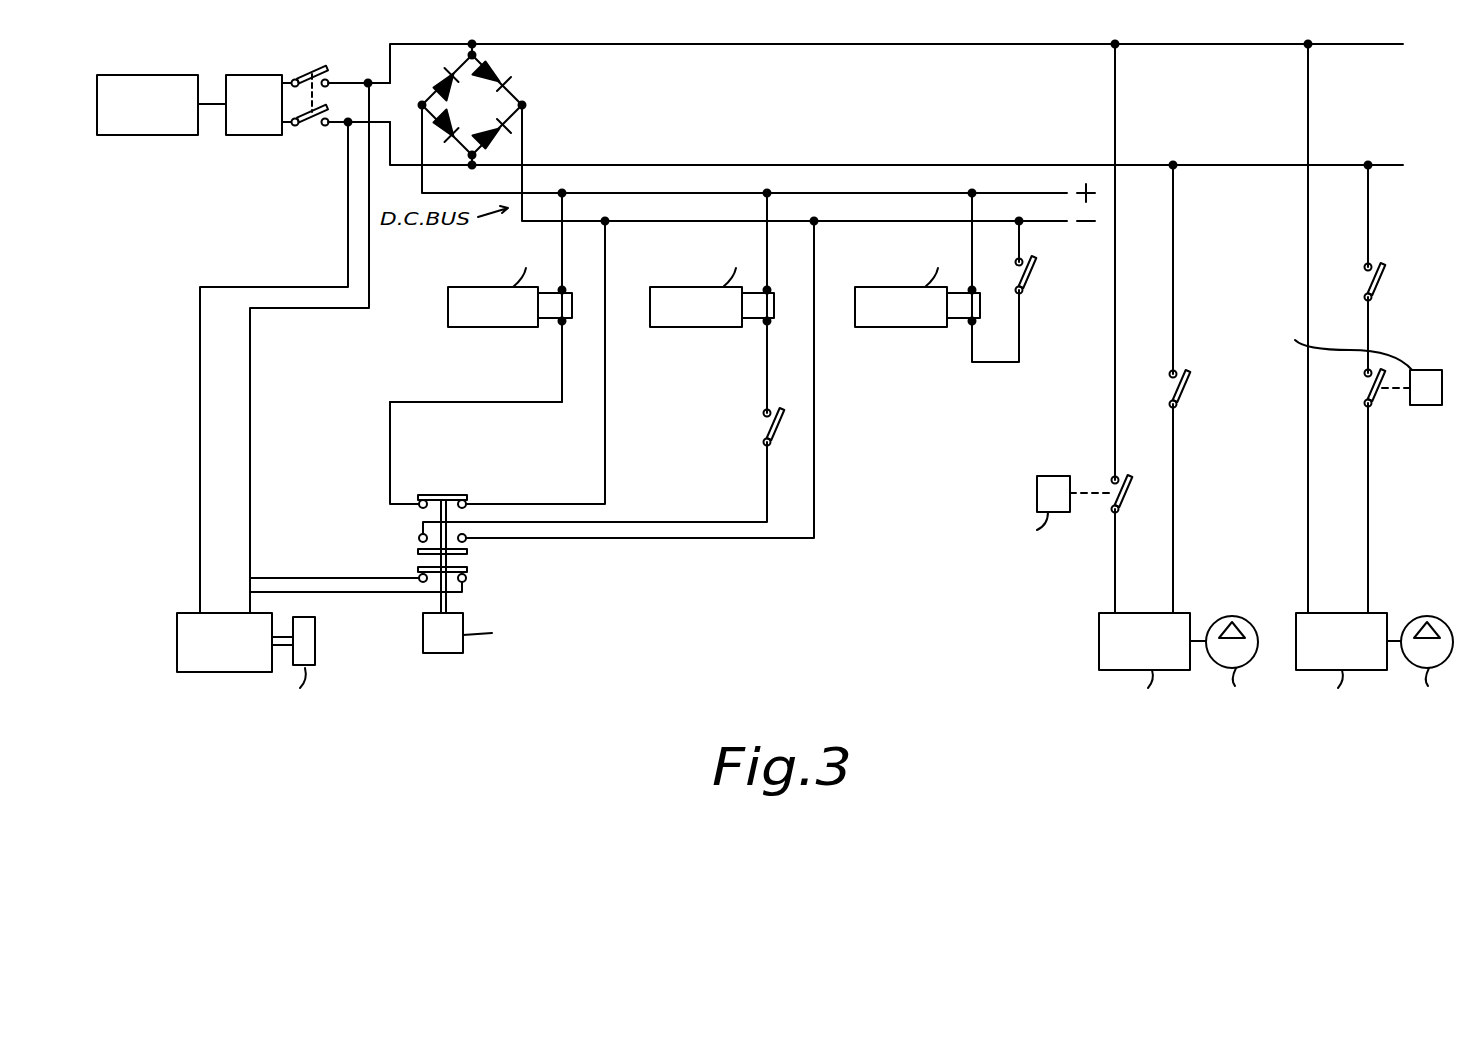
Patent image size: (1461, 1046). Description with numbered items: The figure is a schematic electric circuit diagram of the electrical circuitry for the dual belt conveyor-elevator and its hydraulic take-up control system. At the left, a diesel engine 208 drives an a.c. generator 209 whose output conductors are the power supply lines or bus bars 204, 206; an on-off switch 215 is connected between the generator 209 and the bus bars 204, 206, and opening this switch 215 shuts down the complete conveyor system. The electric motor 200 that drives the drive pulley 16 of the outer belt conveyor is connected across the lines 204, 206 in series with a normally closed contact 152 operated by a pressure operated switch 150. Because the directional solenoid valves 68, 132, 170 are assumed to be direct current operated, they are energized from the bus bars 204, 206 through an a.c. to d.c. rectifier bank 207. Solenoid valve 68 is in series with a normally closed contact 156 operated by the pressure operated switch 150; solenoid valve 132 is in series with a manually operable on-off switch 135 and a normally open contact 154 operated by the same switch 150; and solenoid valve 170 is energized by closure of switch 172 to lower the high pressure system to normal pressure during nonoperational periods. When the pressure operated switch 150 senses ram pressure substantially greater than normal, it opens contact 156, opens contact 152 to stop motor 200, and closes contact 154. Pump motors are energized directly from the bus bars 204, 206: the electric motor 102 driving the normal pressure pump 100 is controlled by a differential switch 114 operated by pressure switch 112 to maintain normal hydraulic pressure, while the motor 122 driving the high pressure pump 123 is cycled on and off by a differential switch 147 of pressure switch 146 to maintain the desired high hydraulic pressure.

The diesel engine 208 is at (148, 75).
The a.c. generator 209 is at (247, 75).
The on-off switch 215 is at (302, 66).
The power supply line 204 is at (752, 44).
The power supply line 206 is at (742, 165).
The a.c. to d.c. rectifier bank 207 is at (531, 89).
The directional solenoid valve 68 is at (468, 330).
The directional solenoid valve 132 is at (684, 330).
The directional solenoid valve 170 is at (885, 328).
The switch 172 is at (1037, 273).
The on-off switch 135 is at (765, 429).
The normally closed contact 156 is at (455, 495).
The normally open contact 154 is at (418, 552).
The normally closed contact 152 is at (465, 569).
The pressure operated switch 150 is at (423, 648).
The electric motor 200 is at (177, 648).
The drive pulley 16 is at (315, 626).
The pressure switch 112 is at (1048, 476).
The differential switch 114 is at (1126, 503).
The pressure switch 146 is at (1425, 405).
The differential switch 147 is at (1375, 392).
The electric motor 102 is at (1099, 638).
The pump 100 is at (1240, 620).
The motor 122 is at (1343, 600).
The pump 123 is at (1420, 618).